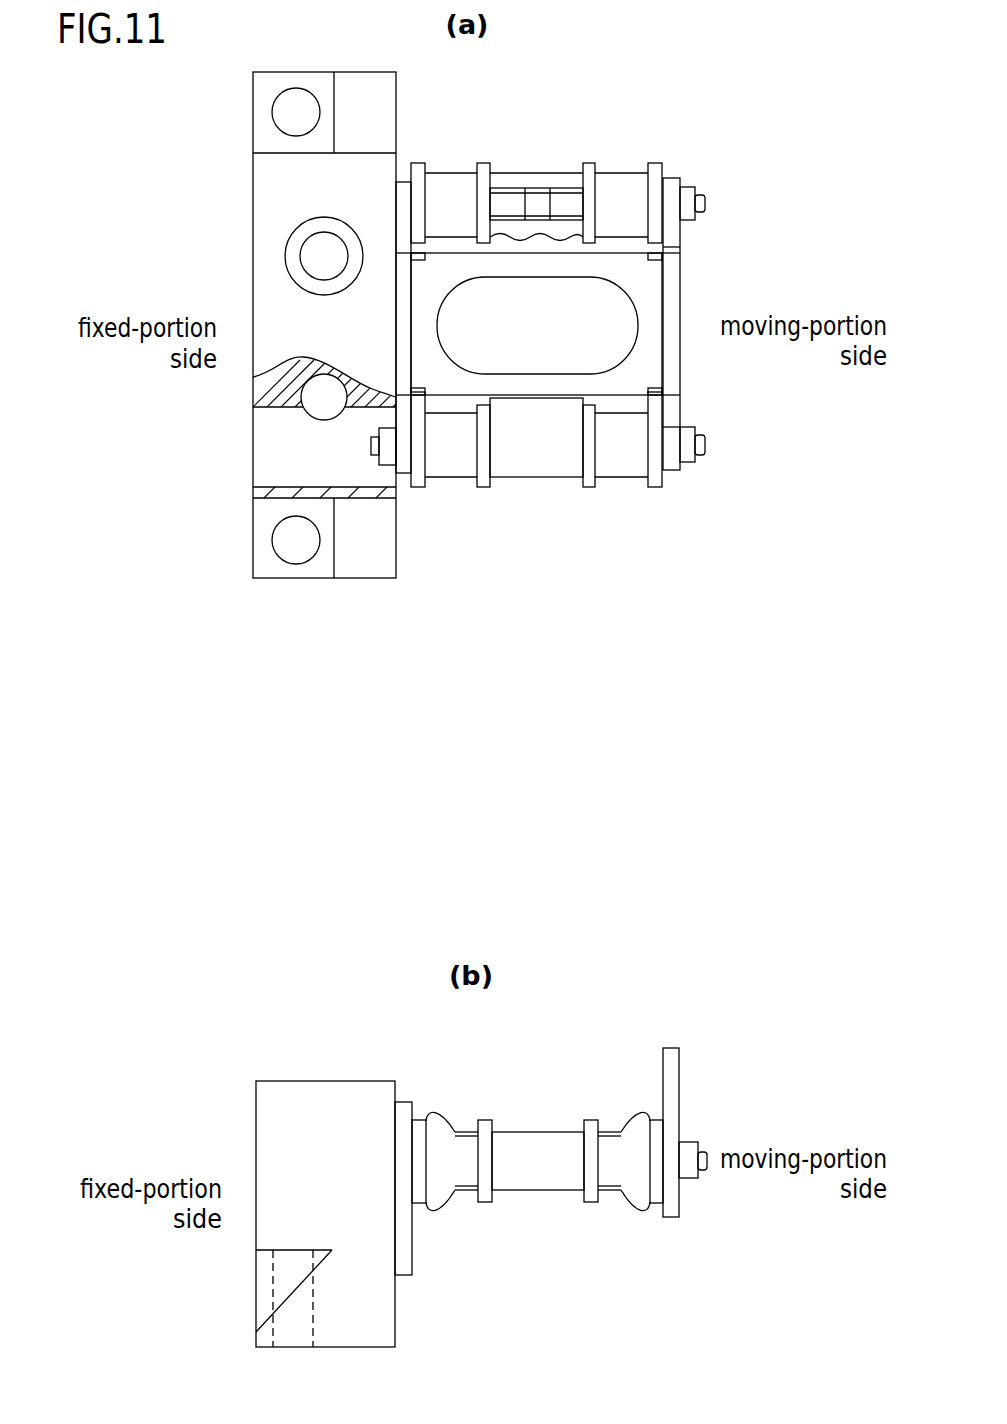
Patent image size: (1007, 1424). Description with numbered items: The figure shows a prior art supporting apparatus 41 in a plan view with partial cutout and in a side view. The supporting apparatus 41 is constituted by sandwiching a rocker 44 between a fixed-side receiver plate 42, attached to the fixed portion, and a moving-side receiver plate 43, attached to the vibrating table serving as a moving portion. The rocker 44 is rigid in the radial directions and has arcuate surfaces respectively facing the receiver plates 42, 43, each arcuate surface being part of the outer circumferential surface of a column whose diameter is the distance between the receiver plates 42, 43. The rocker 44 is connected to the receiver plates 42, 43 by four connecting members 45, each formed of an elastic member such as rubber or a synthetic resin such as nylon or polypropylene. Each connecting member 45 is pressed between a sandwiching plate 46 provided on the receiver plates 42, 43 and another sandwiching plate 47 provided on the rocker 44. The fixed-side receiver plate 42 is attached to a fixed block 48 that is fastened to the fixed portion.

The supporting apparatus 41 is at (690, 165).
The fixed-side receiver plate 42 is at (402, 180).
The moving-side receiver plate 43 is at (670, 285).
The rocker 44 is at (538, 384).
The connecting member 45 is at (456, 178).
The sandwiching plate 46 is at (418, 170).
The sandwiching plate 47 is at (488, 163).
The fixed block 48 is at (268, 188).